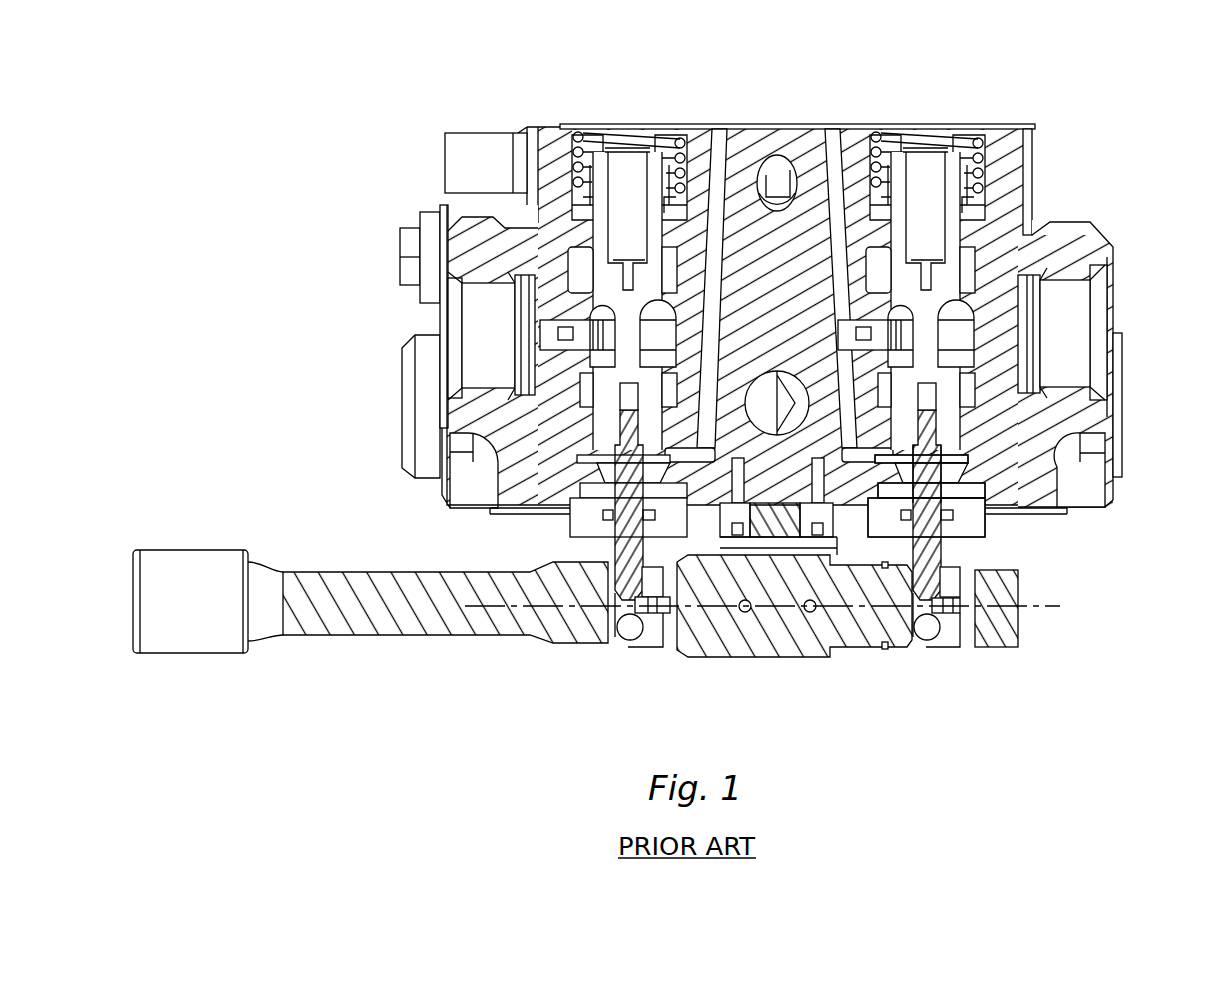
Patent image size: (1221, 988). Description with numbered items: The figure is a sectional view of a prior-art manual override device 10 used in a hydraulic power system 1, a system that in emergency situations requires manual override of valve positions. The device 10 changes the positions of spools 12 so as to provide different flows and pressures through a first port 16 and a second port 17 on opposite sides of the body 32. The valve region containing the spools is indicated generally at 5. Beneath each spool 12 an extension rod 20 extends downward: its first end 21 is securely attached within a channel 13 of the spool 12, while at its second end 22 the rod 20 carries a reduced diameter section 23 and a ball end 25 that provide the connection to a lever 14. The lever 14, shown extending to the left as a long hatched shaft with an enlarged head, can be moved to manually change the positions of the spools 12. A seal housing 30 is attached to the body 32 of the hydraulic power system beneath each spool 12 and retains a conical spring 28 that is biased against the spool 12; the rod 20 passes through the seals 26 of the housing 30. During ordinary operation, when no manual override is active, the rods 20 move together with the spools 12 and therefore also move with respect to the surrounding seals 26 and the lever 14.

The hydraulic power system 1 is at (1076, 78).
The valve assemblies 5 is at (900, 112).
The manual override device 10 is at (370, 598).
The spool 12 is at (610, 393).
The channel 13 is at (935, 383).
The lever 14 is at (317, 630).
The first port 16 is at (412, 318).
The second port 17 is at (1144, 300).
The extension rod 20 is at (617, 551).
The first end 21 is at (945, 413).
The second end 22 is at (928, 612).
The reduced diameter section 23 is at (933, 562).
The ball end 25 is at (921, 578).
The seals 26 is at (945, 505).
The conical spring 28 is at (960, 470).
The seal housing 30 is at (972, 512).
The body 32 is at (527, 499).